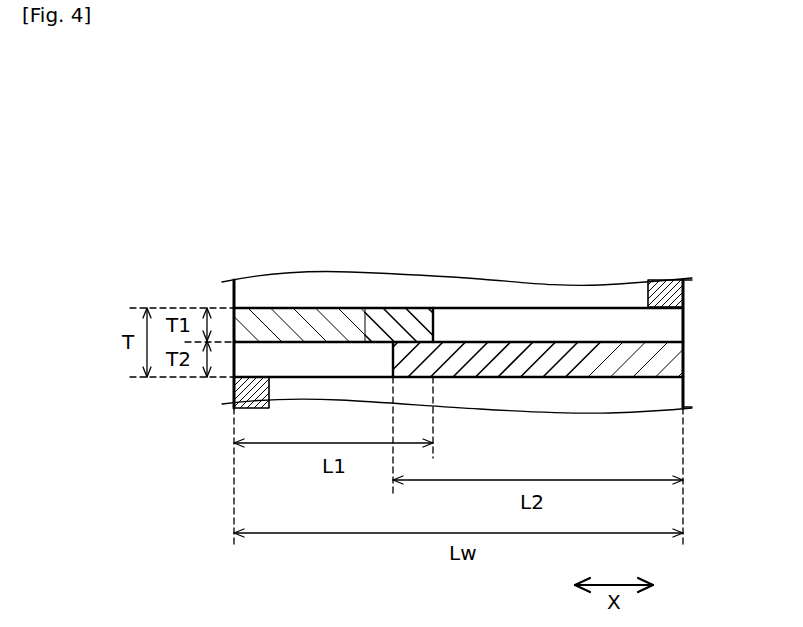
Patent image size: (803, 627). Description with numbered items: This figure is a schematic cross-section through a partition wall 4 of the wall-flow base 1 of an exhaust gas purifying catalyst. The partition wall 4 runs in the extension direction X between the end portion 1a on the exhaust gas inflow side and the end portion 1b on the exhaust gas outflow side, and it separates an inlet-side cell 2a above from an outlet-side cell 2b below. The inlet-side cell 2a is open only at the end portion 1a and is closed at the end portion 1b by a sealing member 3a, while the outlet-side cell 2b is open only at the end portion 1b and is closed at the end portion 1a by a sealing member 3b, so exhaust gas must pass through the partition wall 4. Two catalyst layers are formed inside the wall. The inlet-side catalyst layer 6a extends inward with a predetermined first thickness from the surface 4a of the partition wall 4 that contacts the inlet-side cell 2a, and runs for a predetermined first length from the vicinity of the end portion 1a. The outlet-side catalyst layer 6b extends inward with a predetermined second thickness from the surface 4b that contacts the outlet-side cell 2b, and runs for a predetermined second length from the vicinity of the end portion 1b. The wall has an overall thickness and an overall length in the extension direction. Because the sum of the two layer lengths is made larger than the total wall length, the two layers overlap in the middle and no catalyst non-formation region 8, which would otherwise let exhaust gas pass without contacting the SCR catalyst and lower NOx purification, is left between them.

The base 1 is at (196, 207).
The end portion on the exhaust gas inflow side 1a is at (233, 321).
The end portion on the exhaust gas outflow side 1b is at (685, 329).
The inlet-side cell 2a is at (431, 292).
The outlet-side cell 2b is at (593, 399).
The sealing member 3a is at (655, 282).
The sealing member 3b is at (240, 394).
The partition wall 4 is at (580, 302).
The surface of the partition wall in contact with the inlet-side cell 4a is at (307, 308).
The surface of the partition wall in contact with the outlet-side cell 4b is at (490, 376).
The inlet-side catalyst layer 6a is at (380, 318).
The outlet-side catalyst layer 6b is at (680, 364).
The catalyst non-formation region 8 is at (672, 318).